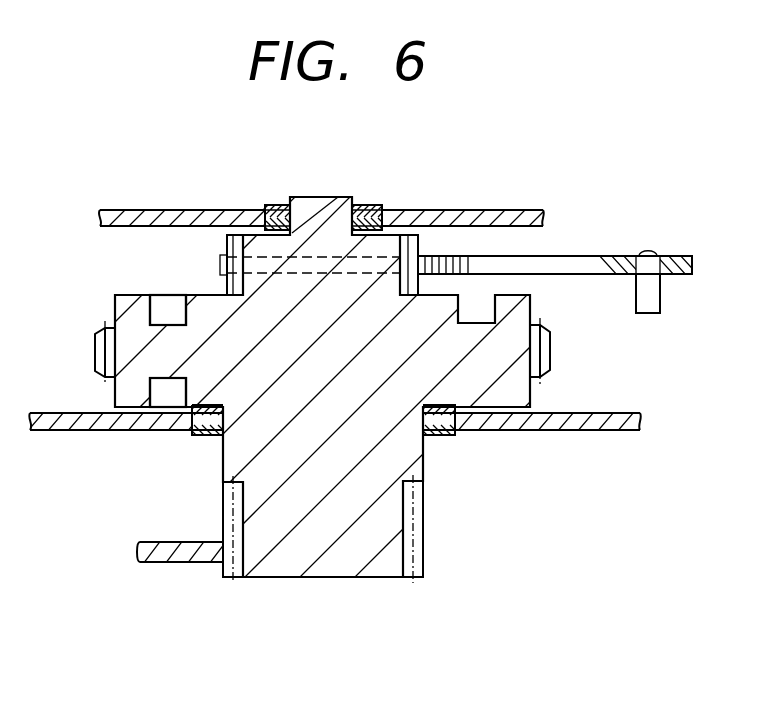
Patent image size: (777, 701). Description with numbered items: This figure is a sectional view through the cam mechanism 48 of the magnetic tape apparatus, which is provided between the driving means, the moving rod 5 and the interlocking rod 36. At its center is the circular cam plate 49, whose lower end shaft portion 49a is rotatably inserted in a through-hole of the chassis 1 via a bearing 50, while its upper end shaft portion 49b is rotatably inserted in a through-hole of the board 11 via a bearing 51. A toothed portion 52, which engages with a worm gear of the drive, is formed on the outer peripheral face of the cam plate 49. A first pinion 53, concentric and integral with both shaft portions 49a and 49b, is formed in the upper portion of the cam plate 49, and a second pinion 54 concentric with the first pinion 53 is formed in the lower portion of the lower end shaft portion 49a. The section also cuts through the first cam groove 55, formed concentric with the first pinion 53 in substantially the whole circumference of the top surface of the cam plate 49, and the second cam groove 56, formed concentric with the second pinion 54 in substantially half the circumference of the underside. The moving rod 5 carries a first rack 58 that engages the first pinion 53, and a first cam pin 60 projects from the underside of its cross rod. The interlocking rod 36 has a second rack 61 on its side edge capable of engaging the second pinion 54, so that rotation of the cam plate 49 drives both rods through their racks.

The chassis 1 is at (55, 432).
The moving rod 5 is at (560, 265).
The board 11 is at (120, 218).
The interlocking rod 36 is at (140, 545).
The cam mechanism 48 is at (569, 187).
The circular cam plate 49 is at (520, 312).
The lower end shaft portion 49a is at (222, 462).
The upper end shaft portion 49b is at (345, 206).
The bearing 50 is at (442, 438).
The bearing 51 is at (278, 205).
The toothed portion 52 is at (552, 352).
The first pinion 53 is at (236, 240).
The second pinion 54 is at (415, 560).
The first cam groove 55 is at (160, 310).
The second cam groove 56 is at (157, 400).
The first rack 58 is at (447, 256).
The first cam pin 60 is at (650, 302).
The second rack 61 is at (225, 582).